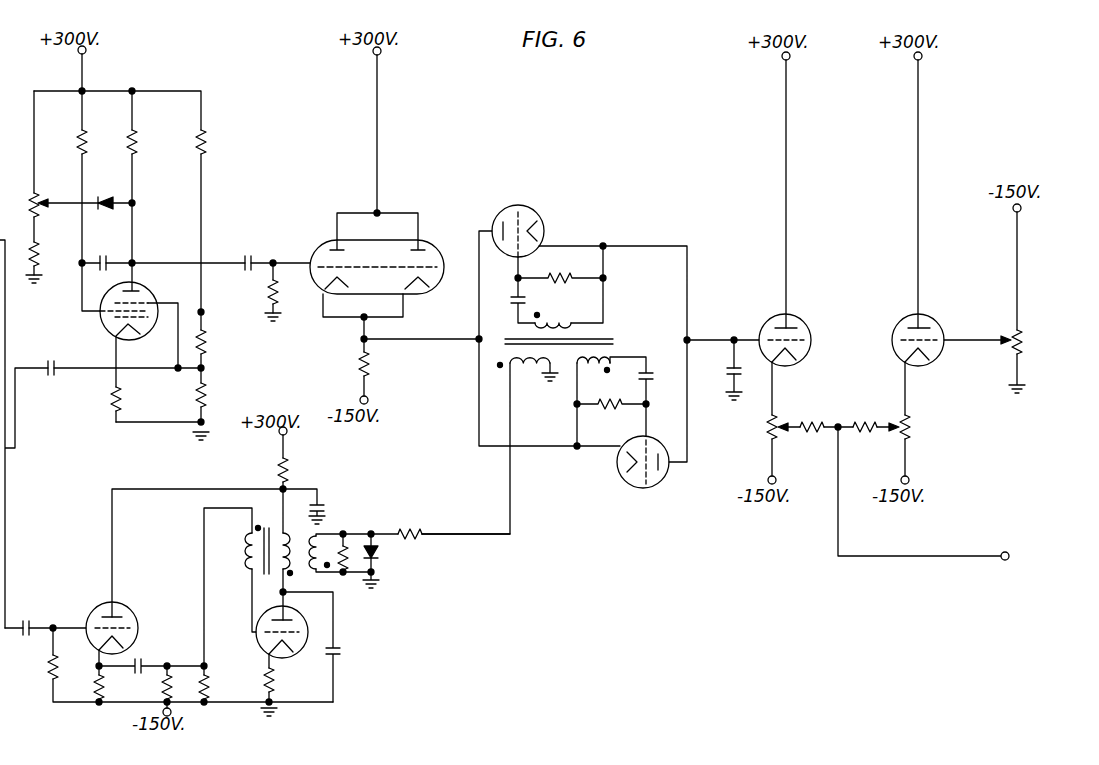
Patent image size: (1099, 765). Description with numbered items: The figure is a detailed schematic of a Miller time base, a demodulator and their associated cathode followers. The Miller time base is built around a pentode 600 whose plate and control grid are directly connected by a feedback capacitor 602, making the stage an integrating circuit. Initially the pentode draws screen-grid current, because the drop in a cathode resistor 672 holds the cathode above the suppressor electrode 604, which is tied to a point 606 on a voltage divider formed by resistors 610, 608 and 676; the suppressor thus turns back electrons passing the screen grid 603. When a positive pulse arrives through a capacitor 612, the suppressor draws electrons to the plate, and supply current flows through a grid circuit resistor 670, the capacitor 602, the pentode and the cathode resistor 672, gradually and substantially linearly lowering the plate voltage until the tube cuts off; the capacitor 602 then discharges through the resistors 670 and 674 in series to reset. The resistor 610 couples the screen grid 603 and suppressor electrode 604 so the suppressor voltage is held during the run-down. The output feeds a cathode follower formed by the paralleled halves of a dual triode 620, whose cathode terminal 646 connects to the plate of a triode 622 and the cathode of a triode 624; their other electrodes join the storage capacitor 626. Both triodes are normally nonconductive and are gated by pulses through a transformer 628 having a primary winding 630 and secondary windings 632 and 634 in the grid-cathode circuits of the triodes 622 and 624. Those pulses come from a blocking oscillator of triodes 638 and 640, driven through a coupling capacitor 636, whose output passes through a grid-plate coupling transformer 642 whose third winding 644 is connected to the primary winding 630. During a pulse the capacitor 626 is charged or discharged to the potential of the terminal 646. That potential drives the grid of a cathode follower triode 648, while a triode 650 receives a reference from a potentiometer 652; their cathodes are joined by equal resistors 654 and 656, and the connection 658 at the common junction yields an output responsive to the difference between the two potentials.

The pentode 600 is at (114, 342).
The capacitor 602 is at (104, 255).
The screen grid 603 is at (100, 318).
The suppressor electrode 604 is at (141, 301).
The point 606 is at (205, 369).
The resistor 608 is at (205, 345).
The resistor 610 is at (206, 397).
The capacitor 612 is at (51, 380).
The dual triode 620 is at (432, 246).
The triode 622 is at (534, 219).
The triode 624 is at (652, 485).
The storage capacitor 626 is at (728, 371).
The transformer 628 is at (560, 413).
The primary winding 630 is at (503, 379).
The secondary winding 632 is at (563, 318).
The secondary winding 634 is at (612, 358).
The coupling capacitor 636 is at (25, 638).
The triode 638 is at (130, 622).
The triode 640 is at (300, 622).
The grid-plate coupling transformer 642 is at (292, 510).
The third winding 644 is at (325, 548).
The cathode terminal 646 is at (362, 339).
The triode 648 is at (805, 324).
The triode 650 is at (935, 324).
The potentiometer 652 is at (1027, 343).
The resistor 654 is at (810, 420).
The resistor 656 is at (865, 420).
The connection 658 is at (975, 556).
The grid circuit resistor 670 is at (78, 142).
The cathode resistor 672 is at (110, 405).
The resistor 674 is at (141, 146).
The resistor 676 is at (208, 147).